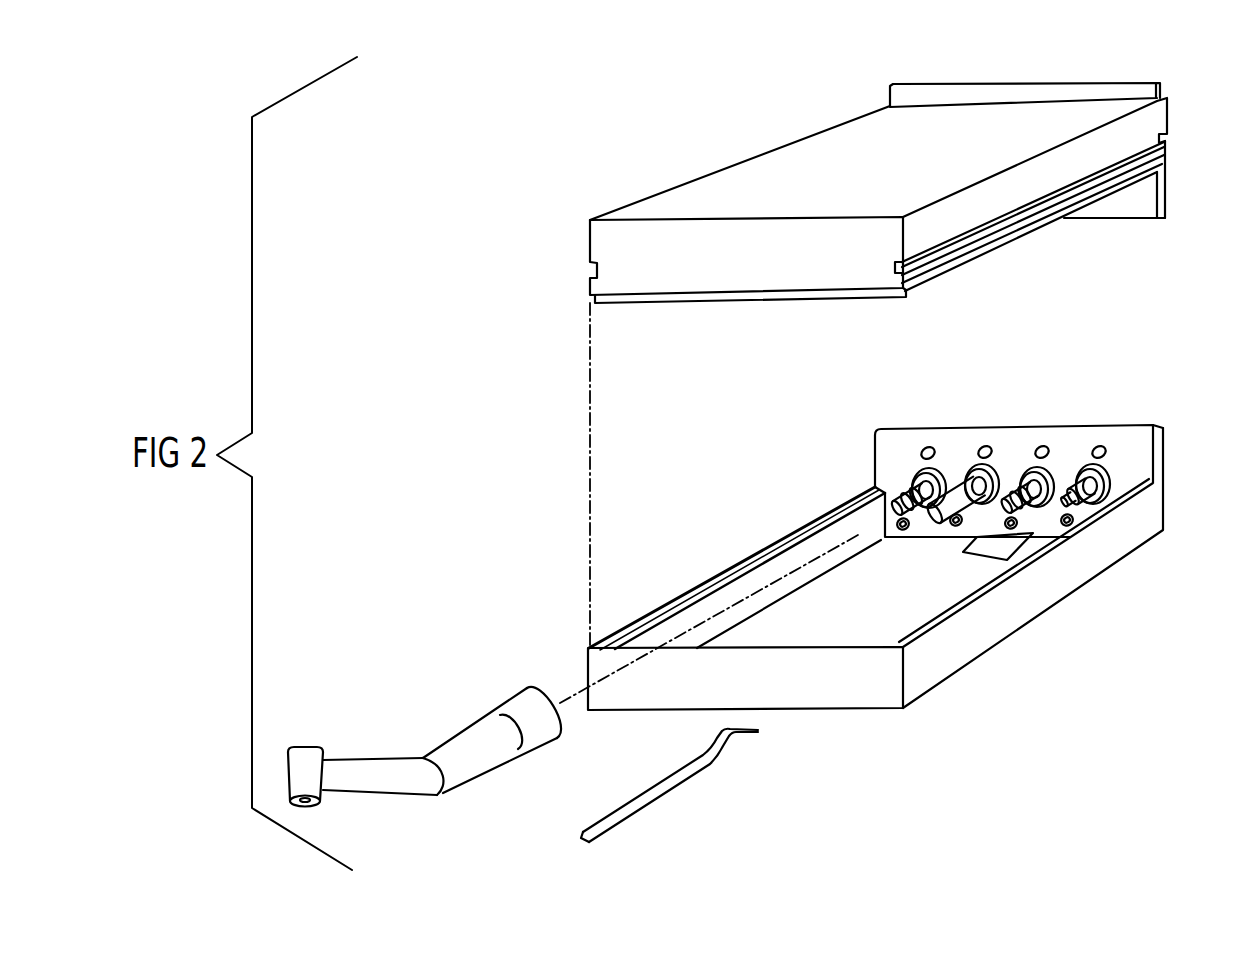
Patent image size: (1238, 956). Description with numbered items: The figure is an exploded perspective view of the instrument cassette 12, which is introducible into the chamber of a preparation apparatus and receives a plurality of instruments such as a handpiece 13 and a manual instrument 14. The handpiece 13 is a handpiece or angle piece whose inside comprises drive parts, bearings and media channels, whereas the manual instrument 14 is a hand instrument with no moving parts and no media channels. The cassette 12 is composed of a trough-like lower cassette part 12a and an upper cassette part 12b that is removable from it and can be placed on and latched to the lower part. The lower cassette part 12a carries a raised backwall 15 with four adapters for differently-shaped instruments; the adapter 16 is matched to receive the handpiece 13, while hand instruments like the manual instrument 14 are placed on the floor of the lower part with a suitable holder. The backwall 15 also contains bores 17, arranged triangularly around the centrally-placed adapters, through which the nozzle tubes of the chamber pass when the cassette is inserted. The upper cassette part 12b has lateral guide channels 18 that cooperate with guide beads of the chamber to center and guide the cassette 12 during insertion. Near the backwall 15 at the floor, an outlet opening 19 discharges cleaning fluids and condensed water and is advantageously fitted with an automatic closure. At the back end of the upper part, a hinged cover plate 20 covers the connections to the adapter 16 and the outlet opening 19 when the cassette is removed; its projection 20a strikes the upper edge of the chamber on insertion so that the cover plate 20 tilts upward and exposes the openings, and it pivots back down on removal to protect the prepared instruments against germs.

The cassette 12 is at (492, 537).
The lower cassette part 12a is at (915, 685).
The upper cassette part 12b is at (633, 210).
The handpiece 13 is at (445, 752).
The manual instrument 14 is at (650, 797).
The backwall 15 is at (898, 440).
The adapter 16 is at (908, 484).
The bores 17 is at (1097, 446).
The lateral guide channels 18 is at (588, 270).
The outlet opening 19 is at (1012, 548).
The cover plate 20 is at (1123, 208).
The projection 20a is at (890, 95).